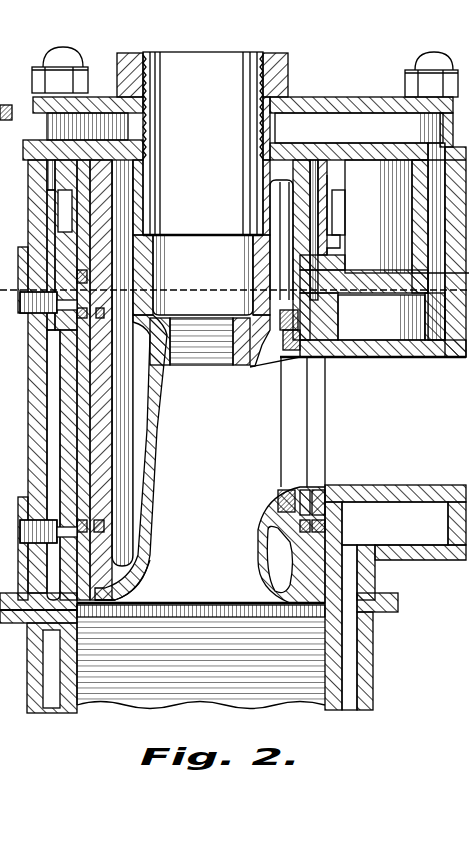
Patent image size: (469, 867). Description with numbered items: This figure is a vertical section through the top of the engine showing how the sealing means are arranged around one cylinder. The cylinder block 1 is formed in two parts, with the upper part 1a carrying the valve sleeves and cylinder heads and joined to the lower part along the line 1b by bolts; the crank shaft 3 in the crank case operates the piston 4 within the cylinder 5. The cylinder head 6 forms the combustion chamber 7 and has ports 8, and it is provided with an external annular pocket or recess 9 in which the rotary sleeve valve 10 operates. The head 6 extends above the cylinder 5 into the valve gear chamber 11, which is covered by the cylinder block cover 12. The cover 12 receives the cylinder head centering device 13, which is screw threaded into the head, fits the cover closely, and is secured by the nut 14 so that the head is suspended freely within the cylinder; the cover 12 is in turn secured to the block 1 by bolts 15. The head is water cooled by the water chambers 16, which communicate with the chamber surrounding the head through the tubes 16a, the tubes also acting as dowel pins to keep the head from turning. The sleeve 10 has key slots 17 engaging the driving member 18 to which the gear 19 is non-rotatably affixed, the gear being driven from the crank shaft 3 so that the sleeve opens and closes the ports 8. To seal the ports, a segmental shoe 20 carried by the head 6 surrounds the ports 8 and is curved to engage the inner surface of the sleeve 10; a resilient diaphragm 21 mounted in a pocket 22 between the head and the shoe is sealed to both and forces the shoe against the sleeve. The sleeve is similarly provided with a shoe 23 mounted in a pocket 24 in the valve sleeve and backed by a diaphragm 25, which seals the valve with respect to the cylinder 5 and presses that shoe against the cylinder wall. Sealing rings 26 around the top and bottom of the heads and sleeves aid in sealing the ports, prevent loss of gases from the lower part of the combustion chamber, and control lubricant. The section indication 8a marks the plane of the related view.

The cylinder block 1 is at (455, 215).
The upper part of the block 1a is at (455, 360).
The joining line 1b is at (398, 612).
The crank shaft 3 is at (3, 290).
The piston 4 is at (125, 690).
The cylinder 5 is at (340, 658).
The cylinder head 6 is at (158, 456).
The combustion chamber 7 is at (269, 545).
The port 8 is at (278, 425).
The section line 8a is at (420, 422).
The external annular pocket or recess 9 is at (87, 547).
The rotary sleeve valve 10 is at (87, 503).
The valve gear chamber 11 is at (336, 262).
The cylinder block cover 12 is at (445, 126).
The cylinder head centering device 13 is at (222, 228).
The nut 14 is at (289, 80).
The bolt 15 is at (428, 62).
The water chamber 16 is at (352, 110).
The tube 16a is at (291, 147).
The key slot 17 is at (195, 304).
The driving member 18 is at (326, 279).
The gear 19 is at (334, 203).
The segmental shoe 20 is at (315, 487).
The resilient diaphragm 21 is at (290, 487).
The pocket 22 is at (352, 512).
The shoe 23 is at (348, 343).
The pocket 24 is at (322, 360).
The diaphragm 25 is at (305, 340).
The sealing ring 26 is at (265, 545).